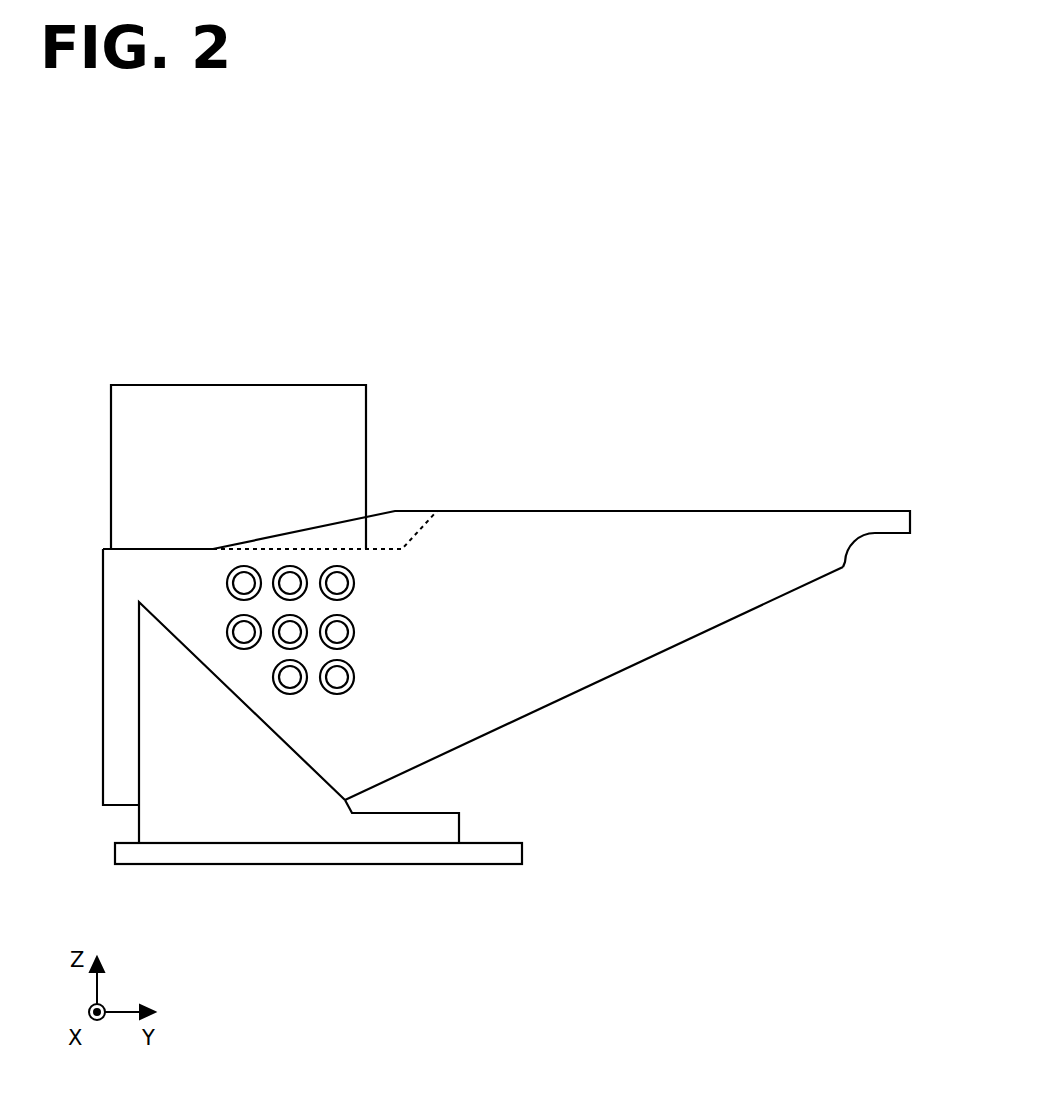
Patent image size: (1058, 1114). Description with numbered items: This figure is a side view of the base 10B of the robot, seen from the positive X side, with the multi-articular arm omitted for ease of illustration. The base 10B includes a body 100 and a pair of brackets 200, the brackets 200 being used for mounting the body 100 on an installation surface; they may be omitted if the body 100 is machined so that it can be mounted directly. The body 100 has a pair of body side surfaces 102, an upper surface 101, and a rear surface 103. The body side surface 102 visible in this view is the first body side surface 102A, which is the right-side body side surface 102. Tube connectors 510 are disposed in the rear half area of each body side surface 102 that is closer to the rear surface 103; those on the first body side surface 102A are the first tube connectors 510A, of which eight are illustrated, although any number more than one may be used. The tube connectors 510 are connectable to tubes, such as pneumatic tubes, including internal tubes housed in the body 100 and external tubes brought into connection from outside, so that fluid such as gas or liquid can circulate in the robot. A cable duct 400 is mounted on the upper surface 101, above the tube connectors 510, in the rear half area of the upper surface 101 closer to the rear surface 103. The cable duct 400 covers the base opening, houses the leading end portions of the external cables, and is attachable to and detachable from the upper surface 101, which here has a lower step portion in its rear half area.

The base 10B is at (528, 430).
The body 100 is at (808, 583).
The upper surface 101 is at (613, 507).
The body side surface 102 is at (594, 683).
The first body side surface 102A is at (447, 673).
The rear surface 103 is at (102, 605).
The bracket 200 is at (308, 828).
The cable duct 400 is at (277, 443).
The tube connector 510 is at (376, 625).
The first tube connector 510A is at (355, 583).